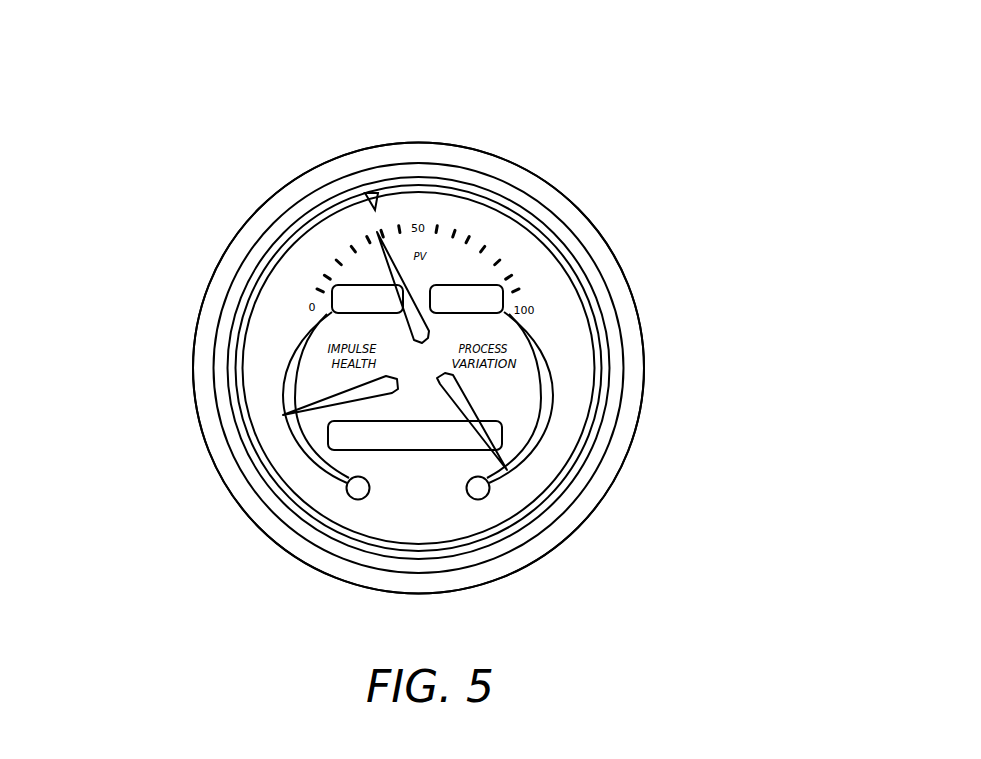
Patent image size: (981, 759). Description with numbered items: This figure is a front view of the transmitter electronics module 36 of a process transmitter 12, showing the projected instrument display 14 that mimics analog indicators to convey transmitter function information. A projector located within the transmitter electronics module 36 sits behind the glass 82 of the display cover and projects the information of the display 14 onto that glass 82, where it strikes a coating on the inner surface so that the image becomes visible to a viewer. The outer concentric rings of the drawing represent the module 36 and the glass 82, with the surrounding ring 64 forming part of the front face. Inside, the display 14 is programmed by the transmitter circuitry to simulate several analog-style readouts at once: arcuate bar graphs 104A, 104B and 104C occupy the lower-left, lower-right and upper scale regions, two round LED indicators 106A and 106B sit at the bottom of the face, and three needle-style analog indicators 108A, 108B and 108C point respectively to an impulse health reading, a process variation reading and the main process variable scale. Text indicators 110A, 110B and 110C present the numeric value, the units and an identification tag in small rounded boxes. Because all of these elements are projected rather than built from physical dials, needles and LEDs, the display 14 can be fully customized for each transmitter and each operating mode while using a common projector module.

The transmitter 12 is at (155, 128).
The projected instrument display 14 is at (562, 339).
The transmitter electronics module 36 is at (490, 152).
The outer ring 64 is at (596, 240).
The glass 82 is at (594, 273).
The bar graph 104A is at (282, 468).
The bar graph 104B is at (545, 463).
The bar graph 104C is at (507, 262).
The LED indicator 106A is at (358, 489).
The LED indicator 106B is at (477, 489).
The analog indicator 108A is at (317, 400).
The analog indicator 108B is at (477, 412).
The analog indicator 108C is at (387, 250).
The text indicator 110A is at (350, 287).
The text indicator 110B is at (467, 283).
The text indicator 110C is at (415, 450).